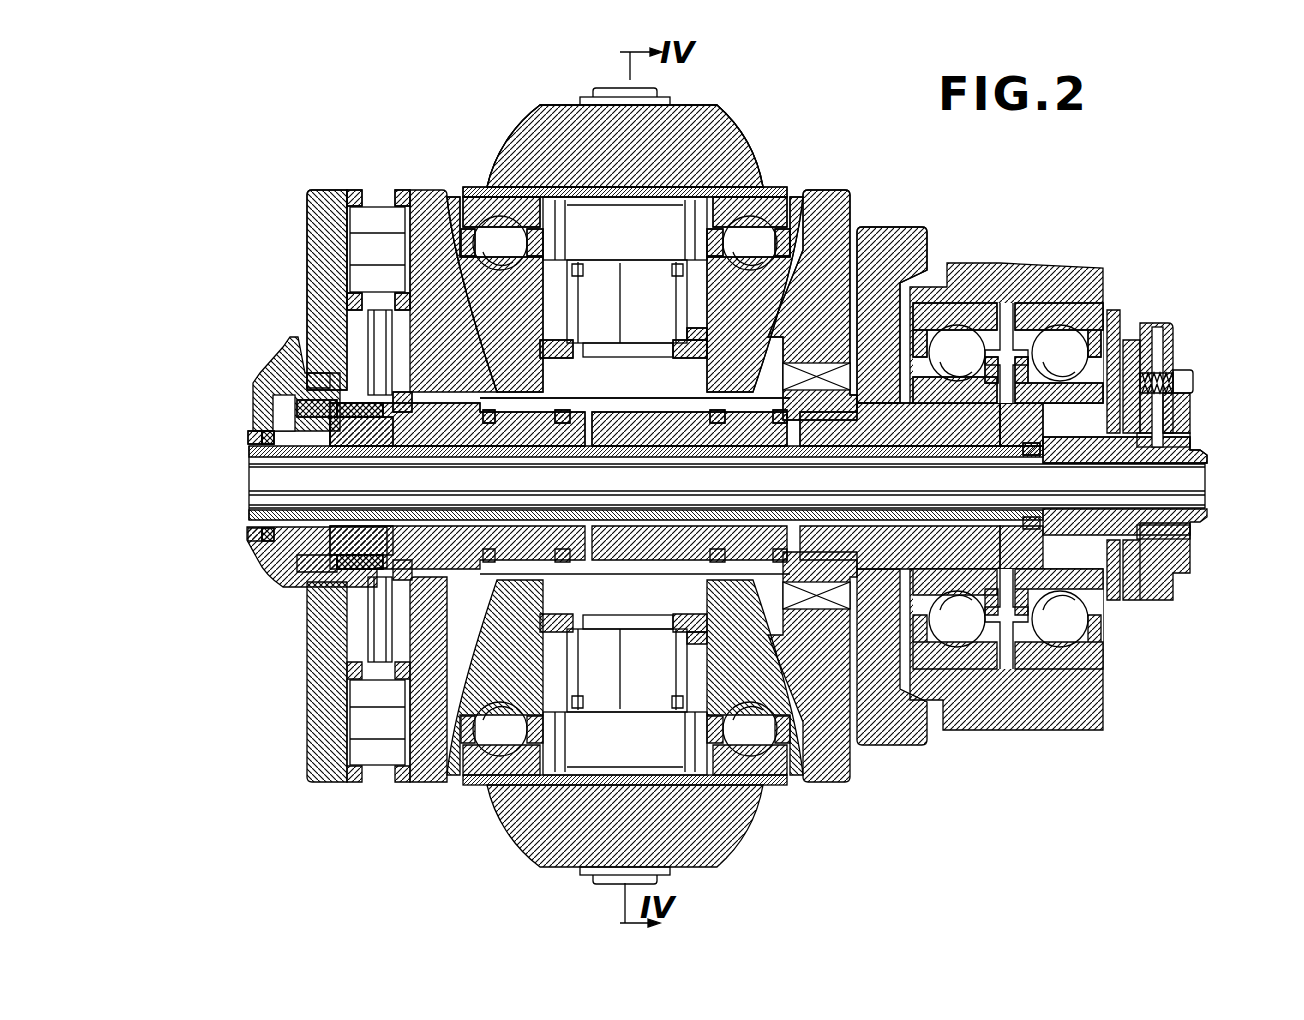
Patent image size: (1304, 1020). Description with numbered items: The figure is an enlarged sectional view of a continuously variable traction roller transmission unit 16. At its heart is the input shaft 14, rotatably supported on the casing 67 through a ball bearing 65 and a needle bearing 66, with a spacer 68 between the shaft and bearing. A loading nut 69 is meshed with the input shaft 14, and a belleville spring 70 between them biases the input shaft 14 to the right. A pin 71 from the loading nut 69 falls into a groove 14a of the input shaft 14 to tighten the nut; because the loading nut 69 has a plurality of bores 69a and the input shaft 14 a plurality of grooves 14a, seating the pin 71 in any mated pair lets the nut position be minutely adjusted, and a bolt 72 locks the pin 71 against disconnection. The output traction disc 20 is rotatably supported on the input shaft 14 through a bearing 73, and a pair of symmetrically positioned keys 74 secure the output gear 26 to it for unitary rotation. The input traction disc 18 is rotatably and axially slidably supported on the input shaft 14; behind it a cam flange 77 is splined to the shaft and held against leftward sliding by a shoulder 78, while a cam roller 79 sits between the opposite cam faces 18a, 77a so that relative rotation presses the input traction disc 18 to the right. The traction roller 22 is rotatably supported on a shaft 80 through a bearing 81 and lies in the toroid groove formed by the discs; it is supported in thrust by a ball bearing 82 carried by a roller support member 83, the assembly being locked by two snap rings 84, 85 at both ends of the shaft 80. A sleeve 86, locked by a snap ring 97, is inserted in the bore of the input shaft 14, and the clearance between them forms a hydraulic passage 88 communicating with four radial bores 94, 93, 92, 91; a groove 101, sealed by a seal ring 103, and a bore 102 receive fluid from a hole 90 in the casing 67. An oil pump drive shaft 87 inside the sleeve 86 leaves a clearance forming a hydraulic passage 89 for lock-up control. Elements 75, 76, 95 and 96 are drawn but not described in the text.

The input shaft 14 is at (1200, 452).
The groove 14a is at (1180, 437).
The wheel and bearing assembly 16 is at (485, 102).
The input traction disc 18 is at (437, 205).
The cam face 18a is at (393, 205).
The output traction disc 20 is at (823, 195).
The traction roller 22 is at (532, 322).
The output gear 26 is at (893, 228).
The ball bearing 65 is at (1052, 350).
The needle bearing 66 is at (325, 372).
The casing 67 is at (993, 290).
The spacer 68 is at (1113, 333).
The loading nut 69 is at (1178, 555).
The bore 69a is at (1178, 338).
The belleville spring 70 is at (1133, 347).
The pin 71 is at (1185, 415).
The bolt 72 is at (1195, 382).
The bearing 73 is at (700, 393).
The keys 74 is at (817, 580).
The ball bearing 75 is at (952, 348).
The flange 76 is at (553, 392).
The cam flange 77 is at (320, 205).
The cam face 77a is at (345, 205).
The shoulder 78 is at (403, 397).
The cam roller 79 is at (375, 220).
The shaft 80 is at (680, 152).
The bearing 81 is at (690, 305).
The ball bearing 82 is at (748, 235).
The roller support member 83 is at (742, 160).
The snap ring 84 is at (682, 348).
The snap ring 85 is at (672, 100).
The sleeve 86 is at (250, 458).
The oil pump drive shaft 87 is at (257, 485).
The hydraulic passage 88 is at (645, 447).
The hydraulic passage 89 is at (622, 512).
The hole 90 is at (288, 345).
The radial bore 91 is at (1003, 445).
The radial bore 92 is at (767, 447).
The radial bore 93 is at (592, 418).
The radial bore 94 is at (350, 430).
The key 95 is at (1025, 517).
The seal 96 is at (257, 528).
The snap ring 97 is at (248, 446).
The groove 101 is at (268, 378).
The bore 102 is at (290, 413).
The seal ring 103 is at (250, 432).